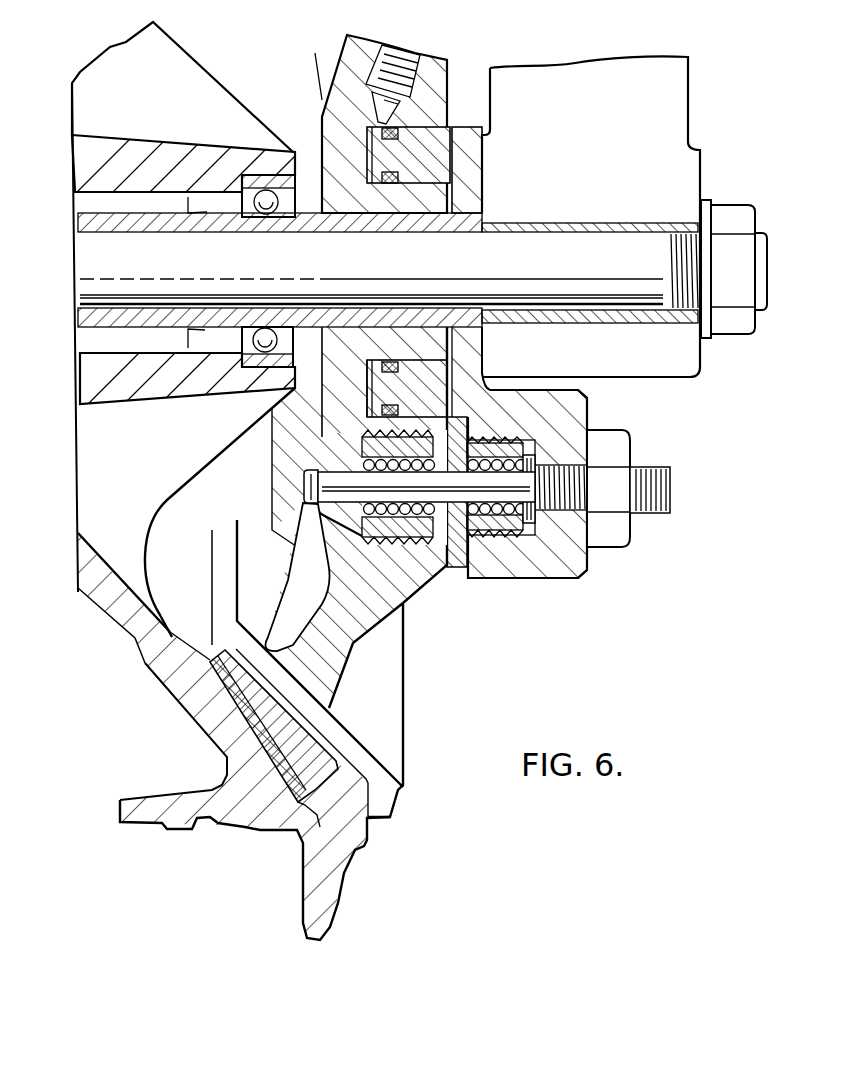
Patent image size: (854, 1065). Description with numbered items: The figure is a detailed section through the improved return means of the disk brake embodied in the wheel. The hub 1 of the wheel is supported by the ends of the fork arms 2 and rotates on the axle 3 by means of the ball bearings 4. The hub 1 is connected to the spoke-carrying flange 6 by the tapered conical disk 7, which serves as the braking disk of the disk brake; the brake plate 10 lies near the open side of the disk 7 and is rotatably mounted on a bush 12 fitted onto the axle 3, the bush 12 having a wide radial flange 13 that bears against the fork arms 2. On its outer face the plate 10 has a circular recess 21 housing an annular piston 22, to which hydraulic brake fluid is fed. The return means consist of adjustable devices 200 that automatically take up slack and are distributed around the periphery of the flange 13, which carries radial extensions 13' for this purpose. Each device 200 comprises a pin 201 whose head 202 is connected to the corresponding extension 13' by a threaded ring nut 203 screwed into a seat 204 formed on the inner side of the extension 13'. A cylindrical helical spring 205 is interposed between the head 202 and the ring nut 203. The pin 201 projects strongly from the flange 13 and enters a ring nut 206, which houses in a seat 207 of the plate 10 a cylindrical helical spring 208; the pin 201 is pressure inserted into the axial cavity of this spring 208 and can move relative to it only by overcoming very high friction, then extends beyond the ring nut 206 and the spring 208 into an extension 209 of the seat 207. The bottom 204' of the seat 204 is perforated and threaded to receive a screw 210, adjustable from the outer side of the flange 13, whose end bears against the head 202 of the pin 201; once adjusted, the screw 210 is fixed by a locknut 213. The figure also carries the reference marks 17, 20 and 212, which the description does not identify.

The hub 1 is at (196, 166).
The fork arms 2 is at (664, 90).
The axle 3 is at (593, 247).
The ball bearings 4 is at (265, 194).
The spokes carrying flange 6 is at (213, 810).
The tapered conical disk 7 is at (103, 582).
The brake plate 10 is at (332, 652).
The bush 12 is at (350, 231).
The radial flange 13 is at (493, 272).
The radial extension 13' is at (553, 483).
The clamp wedge 17 is at (278, 758).
The clamp strip 20 is at (180, 713).
The circular recess 21 is at (354, 403).
The annular piston 22 is at (423, 158).
The adjustable device 200 is at (502, 588).
The pin 201 is at (342, 490).
The head 202 is at (552, 553).
The threaded ring nut 203 is at (480, 545).
The seat 204 is at (470, 406).
The bottom of the seat 204' is at (521, 461).
The cylindrical helical spring 205 is at (524, 530).
The ring nut 206 is at (426, 580).
The seat 207 is at (393, 556).
The cylindrical helical spring 208 is at (362, 446).
The extension of the seat 209 is at (303, 500).
The screw 210 is at (586, 560).
The threaded end 212 is at (647, 473).
The locknut 213 is at (621, 532).